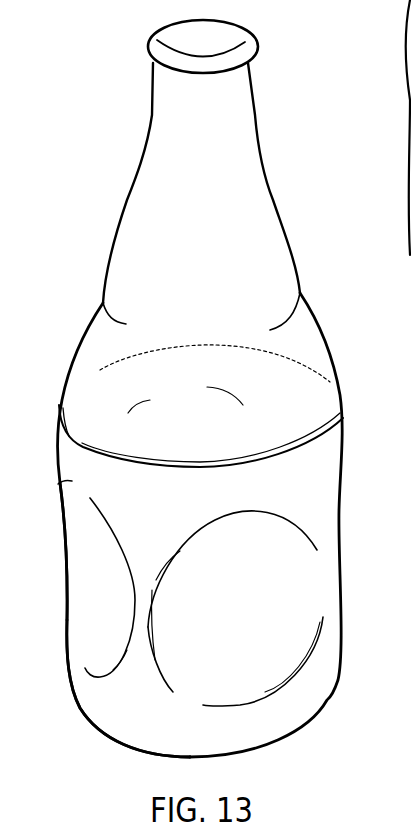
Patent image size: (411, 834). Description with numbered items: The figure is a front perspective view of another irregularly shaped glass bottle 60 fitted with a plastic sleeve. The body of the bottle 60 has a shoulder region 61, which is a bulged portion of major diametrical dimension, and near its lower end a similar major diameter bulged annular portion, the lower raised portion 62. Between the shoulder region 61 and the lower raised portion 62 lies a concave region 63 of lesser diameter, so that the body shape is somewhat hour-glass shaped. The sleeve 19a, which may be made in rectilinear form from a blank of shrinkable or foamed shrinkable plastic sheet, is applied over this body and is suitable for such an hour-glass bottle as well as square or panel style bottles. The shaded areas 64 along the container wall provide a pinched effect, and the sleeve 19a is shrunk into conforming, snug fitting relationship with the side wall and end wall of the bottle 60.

The sleeve 19a is at (160, 523).
The bottle 60 is at (207, 431).
The shoulder region 61 is at (347, 437).
The lower raised portion 62 is at (67, 656).
The concave region 63 is at (68, 557).
The shaded areas 64 is at (133, 596).